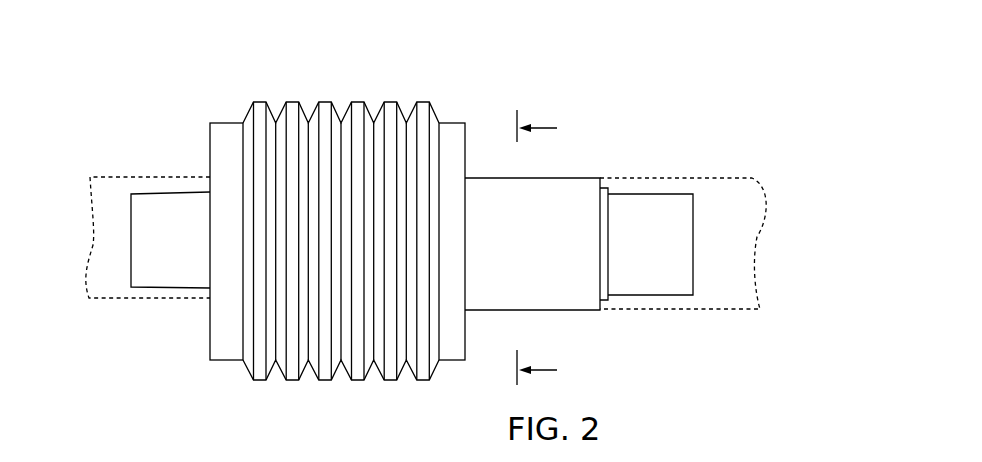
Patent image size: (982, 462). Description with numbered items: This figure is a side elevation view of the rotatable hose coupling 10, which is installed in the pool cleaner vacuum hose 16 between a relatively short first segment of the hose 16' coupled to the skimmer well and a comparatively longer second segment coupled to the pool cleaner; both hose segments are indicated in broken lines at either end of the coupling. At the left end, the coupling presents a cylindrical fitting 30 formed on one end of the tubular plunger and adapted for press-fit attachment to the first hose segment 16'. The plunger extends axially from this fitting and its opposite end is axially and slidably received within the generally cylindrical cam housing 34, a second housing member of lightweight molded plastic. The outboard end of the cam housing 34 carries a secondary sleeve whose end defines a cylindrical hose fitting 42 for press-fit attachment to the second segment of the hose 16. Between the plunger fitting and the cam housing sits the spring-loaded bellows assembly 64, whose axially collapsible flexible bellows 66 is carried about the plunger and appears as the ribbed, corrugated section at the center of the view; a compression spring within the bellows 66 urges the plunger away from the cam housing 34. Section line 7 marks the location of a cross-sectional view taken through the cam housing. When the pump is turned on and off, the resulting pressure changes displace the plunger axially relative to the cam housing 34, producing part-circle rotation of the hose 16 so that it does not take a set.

The rotatable hose coupling 10 is at (620, 127).
The vacuum hose 16 is at (717, 223).
The first segment of the hose 16' is at (148, 208).
The cylindrical fitting 30 is at (155, 268).
The cam housing 34 is at (538, 288).
The cylindrical hose fitting 42 is at (664, 283).
The spring-loaded bellows assembly 64 is at (245, 88).
The flexible bellows 66 is at (328, 108).
The section line 7- 7 is at (537, 243).